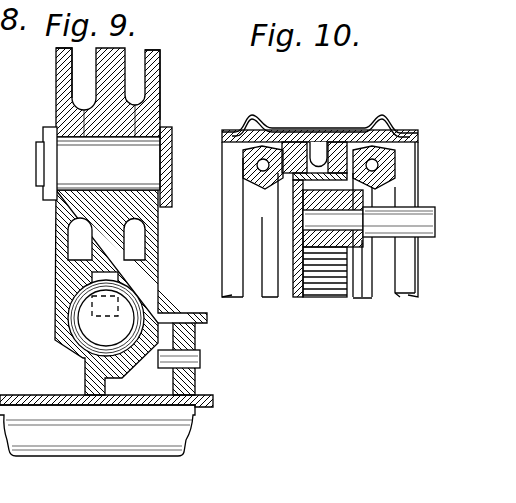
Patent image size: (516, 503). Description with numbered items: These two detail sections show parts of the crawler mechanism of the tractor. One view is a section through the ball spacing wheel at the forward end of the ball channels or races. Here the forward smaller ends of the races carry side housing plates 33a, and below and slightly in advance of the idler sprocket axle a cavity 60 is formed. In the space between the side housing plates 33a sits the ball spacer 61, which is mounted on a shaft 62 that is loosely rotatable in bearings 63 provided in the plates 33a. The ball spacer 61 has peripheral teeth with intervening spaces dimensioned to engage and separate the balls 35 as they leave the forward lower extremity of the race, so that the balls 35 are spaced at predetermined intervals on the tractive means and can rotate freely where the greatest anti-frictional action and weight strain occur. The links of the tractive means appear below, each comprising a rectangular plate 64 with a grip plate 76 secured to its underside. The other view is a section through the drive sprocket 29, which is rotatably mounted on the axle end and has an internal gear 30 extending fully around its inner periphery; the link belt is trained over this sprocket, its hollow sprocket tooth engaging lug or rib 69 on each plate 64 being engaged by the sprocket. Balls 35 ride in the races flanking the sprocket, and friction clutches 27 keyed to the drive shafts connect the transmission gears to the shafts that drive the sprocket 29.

In FIG. 9, the side housing plates 33a is at (62, 83).
In FIG. 9, the cavity 60 is at (136, 83).
In FIG. 9, the shaft 62 is at (40, 318).
In FIG. 9, the bearings 63 is at (58, 205).
In FIG. 9, the ball spacer 61 is at (112, 245).
In FIG. 9, the balls 35 is at (106, 318).
In FIG. 10, the balls 35 is at (257, 165).
In FIG. 9, the rectangular plate 64 is at (40, 390).
In FIG. 10, the rectangular plate 64 is at (403, 137).
In FIG. 9, the grip plate 76 is at (120, 452).
In FIG. 10, the grip plate 76 is at (290, 118).
In FIG. 10, the hollow sprocket tooth engaging lug or rib 69 is at (320, 143).
In FIG. 10, the drive sprocket 29 is at (328, 150).
In FIG. 10, the friction clutches 27 is at (352, 290).
In FIG. 10, the internal gear 30 is at (315, 292).